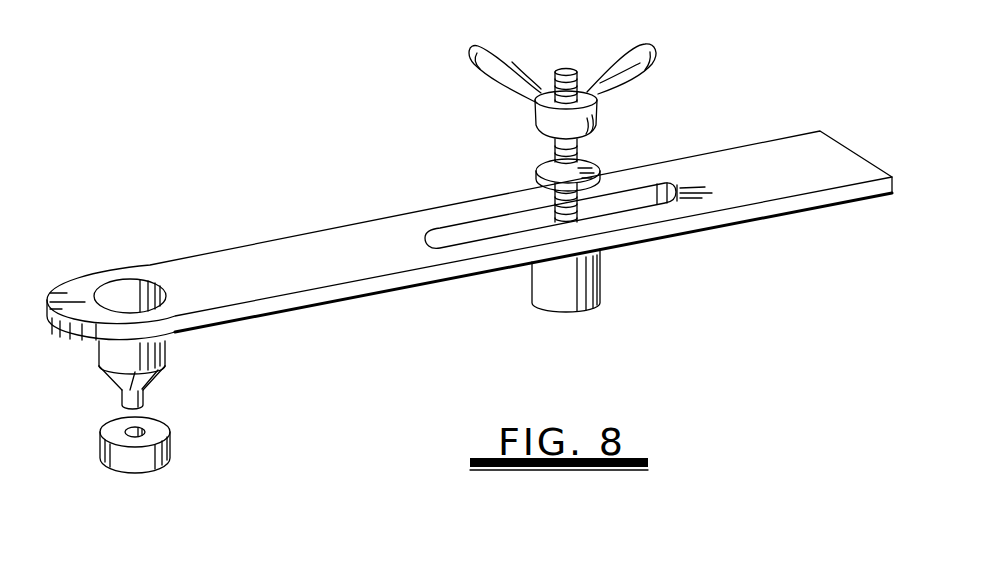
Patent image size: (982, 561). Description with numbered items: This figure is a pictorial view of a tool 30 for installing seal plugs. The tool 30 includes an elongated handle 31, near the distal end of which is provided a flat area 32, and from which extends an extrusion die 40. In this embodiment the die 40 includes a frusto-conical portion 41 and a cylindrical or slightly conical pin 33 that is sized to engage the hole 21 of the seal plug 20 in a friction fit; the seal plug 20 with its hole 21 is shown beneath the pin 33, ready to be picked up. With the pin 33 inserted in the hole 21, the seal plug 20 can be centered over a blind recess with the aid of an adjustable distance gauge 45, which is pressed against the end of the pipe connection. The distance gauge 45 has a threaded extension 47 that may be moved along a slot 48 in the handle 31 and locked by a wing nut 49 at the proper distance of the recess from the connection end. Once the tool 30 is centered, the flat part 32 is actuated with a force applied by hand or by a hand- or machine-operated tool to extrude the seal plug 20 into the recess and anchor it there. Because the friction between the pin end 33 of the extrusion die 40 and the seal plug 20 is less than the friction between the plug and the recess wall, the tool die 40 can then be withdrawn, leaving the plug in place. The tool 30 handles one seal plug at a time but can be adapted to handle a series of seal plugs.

The seal plug 20 is at (120, 462).
The hole 21 is at (133, 433).
The tool 30 is at (296, 232).
The elongated handle 31 is at (350, 272).
The flat area 32 is at (121, 296).
The pin 33 is at (127, 397).
The extrusion die 40 is at (117, 355).
The frusto-conical portion 41 is at (148, 387).
The adjustable distance gauge 45 is at (602, 290).
The threaded extension 47 is at (580, 165).
The slot 48 is at (497, 226).
The wing nut 49 is at (655, 52).